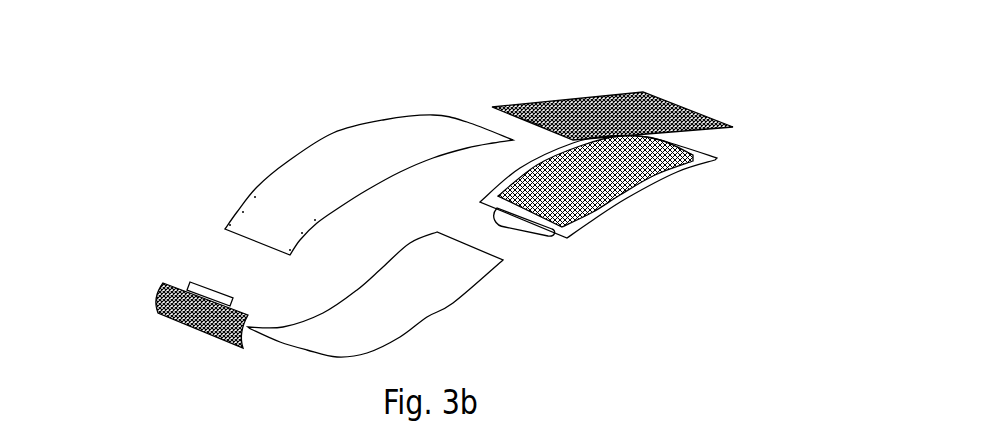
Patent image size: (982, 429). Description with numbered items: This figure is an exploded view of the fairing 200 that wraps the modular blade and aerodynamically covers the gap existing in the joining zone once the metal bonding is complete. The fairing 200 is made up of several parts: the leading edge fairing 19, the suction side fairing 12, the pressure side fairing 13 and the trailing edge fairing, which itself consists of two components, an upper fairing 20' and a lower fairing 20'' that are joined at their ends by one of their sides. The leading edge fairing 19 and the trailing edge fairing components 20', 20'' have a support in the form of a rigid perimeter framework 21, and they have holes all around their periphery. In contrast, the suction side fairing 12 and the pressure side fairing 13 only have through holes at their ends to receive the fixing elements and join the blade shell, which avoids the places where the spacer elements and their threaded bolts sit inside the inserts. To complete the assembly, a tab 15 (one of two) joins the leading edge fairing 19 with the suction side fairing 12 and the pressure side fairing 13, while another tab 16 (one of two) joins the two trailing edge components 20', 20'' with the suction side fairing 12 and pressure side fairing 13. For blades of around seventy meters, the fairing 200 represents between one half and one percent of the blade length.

The fairing 200 is at (232, 184).
The suction side fairing 12 is at (350, 155).
The pressure side fairing 13 is at (438, 288).
The tab 15 is at (192, 282).
The leading edge fairing 19 is at (165, 295).
The rigid perimeter framework 21 is at (707, 162).
The lower fairing 20'' is at (614, 202).
The tab 16 is at (532, 123).
The upper fairing 20' is at (612, 92).